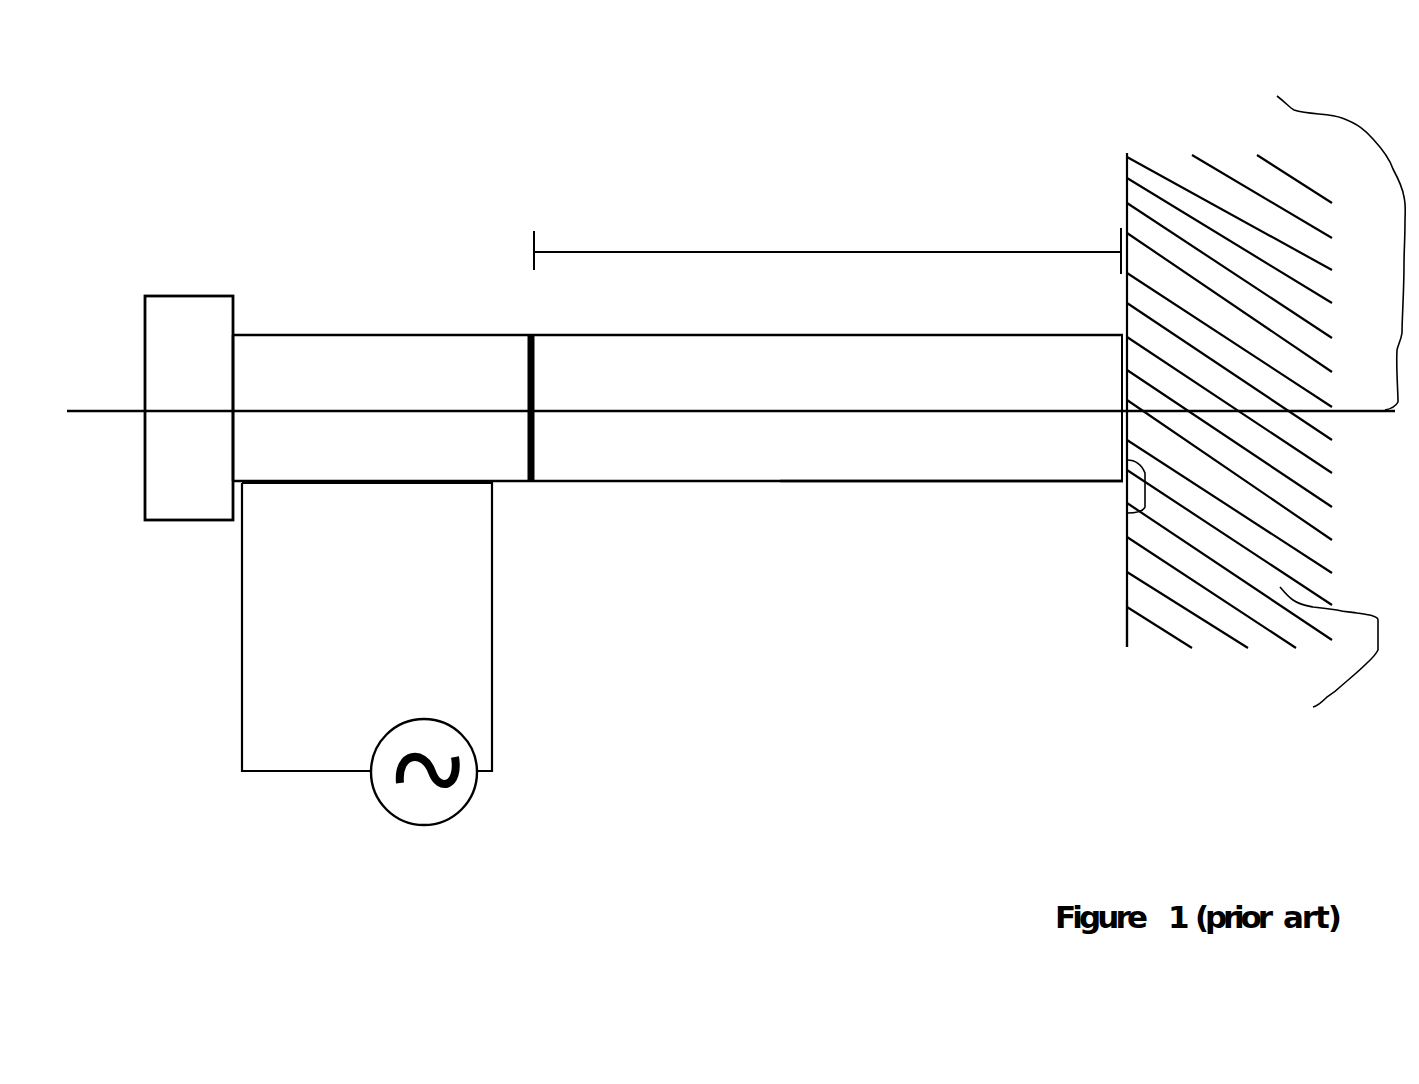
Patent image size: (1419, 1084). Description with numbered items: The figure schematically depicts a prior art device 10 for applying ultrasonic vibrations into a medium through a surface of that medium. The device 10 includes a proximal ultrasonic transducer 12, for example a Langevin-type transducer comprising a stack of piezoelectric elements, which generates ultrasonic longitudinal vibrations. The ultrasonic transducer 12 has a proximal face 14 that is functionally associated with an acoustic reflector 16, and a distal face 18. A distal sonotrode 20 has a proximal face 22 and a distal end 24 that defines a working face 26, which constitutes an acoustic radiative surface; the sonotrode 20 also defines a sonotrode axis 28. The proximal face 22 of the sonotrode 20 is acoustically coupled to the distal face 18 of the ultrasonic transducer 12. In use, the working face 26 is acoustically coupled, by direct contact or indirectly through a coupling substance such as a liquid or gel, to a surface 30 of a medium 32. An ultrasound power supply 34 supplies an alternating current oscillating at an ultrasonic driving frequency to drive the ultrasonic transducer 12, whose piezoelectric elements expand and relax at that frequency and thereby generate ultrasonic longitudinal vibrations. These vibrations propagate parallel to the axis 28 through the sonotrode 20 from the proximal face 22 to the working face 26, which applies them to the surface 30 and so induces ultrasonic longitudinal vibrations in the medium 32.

The device 10 is at (218, 145).
The ultrasonic transducer 12 is at (399, 330).
The proximal face 14 is at (239, 381).
The acoustic reflector 16 is at (175, 504).
The distal face 18 is at (533, 470).
The sonotrode 20 is at (859, 483).
The proximal face 22 is at (524, 358).
The distal end 24 is at (1087, 453).
The working face 26 is at (1127, 515).
The sonotrode axis 28 is at (1277, 96).
The surface 30 is at (1122, 625).
The medium 32 is at (1313, 707).
The ultrasound power supply 34 is at (478, 792).